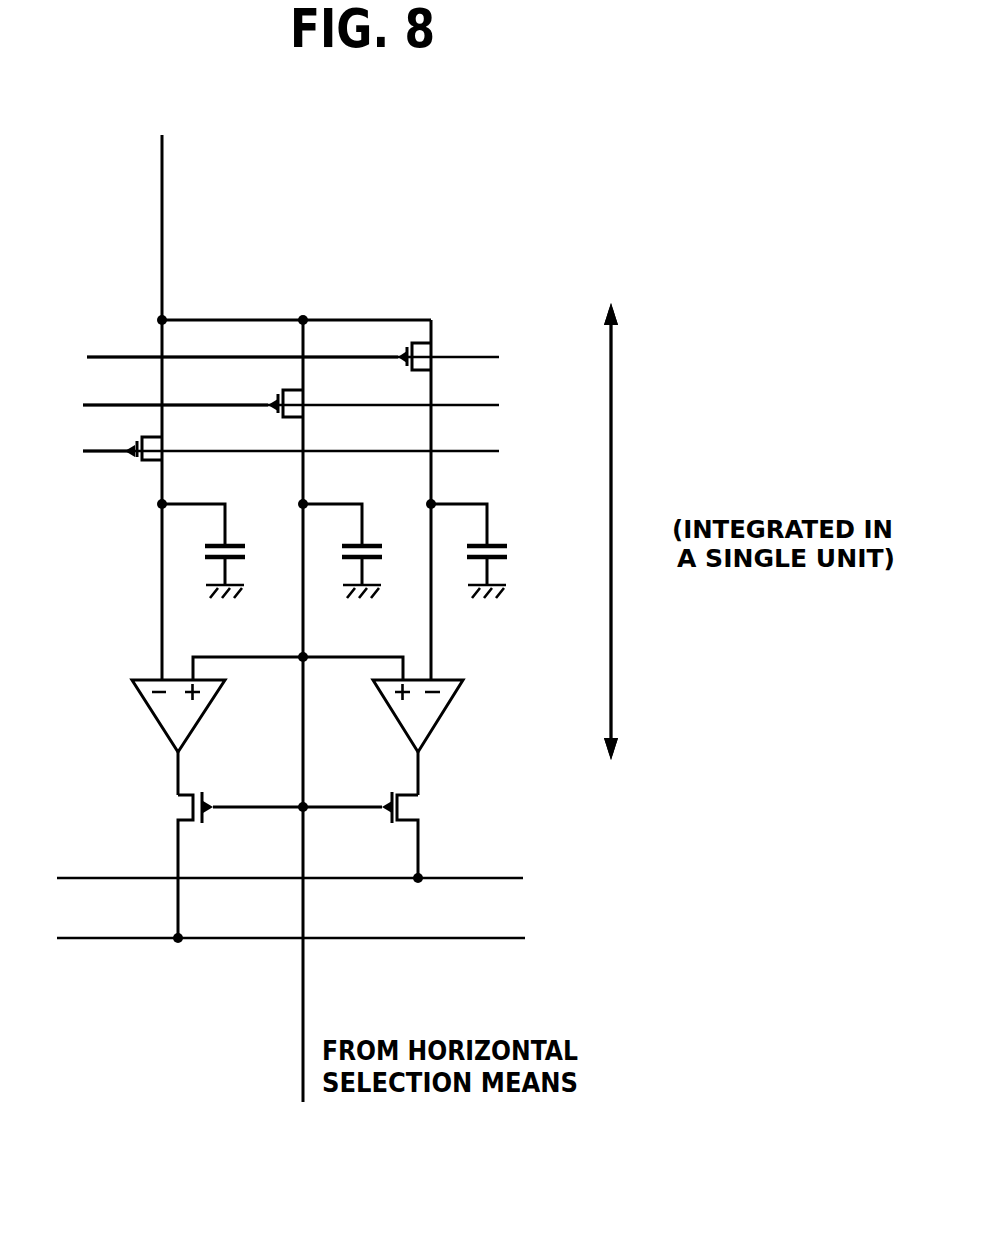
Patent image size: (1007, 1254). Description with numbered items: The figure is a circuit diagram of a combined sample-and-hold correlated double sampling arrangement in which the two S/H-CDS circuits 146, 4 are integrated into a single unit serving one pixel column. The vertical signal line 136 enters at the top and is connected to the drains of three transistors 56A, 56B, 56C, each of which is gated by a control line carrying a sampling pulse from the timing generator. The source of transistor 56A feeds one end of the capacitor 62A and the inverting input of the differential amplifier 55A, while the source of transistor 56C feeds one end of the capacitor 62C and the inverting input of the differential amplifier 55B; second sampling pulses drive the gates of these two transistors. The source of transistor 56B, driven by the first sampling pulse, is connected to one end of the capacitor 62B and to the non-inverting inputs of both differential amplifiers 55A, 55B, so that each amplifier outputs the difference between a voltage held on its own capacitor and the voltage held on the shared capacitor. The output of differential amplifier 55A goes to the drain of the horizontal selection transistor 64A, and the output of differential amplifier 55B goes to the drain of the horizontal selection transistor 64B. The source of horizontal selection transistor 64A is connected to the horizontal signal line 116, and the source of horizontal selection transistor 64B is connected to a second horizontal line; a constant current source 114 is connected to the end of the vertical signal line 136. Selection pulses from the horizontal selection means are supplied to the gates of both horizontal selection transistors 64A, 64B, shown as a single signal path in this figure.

The vertical signal line 136 is at (163, 170).
The transistor 56A is at (136, 463).
The transistor 56B is at (272, 402).
The transistor 56C is at (420, 350).
The capacitor 62A is at (228, 544).
The capacitor 62B is at (366, 544).
The capacitor 62C is at (492, 544).
The differential amplifier 55A is at (146, 716).
The differential amplifier 55B is at (446, 716).
The horizontal selection transistor 64A is at (176, 806).
The horizontal selection transistor 64B is at (408, 804).
The horizontal signal line 116 is at (511, 878).
The constant current source 114 is at (505, 938).
The S/H-CDS circuit 146 is at (612, 487).
The S/H-CDS circuit 4 is at (611, 531).